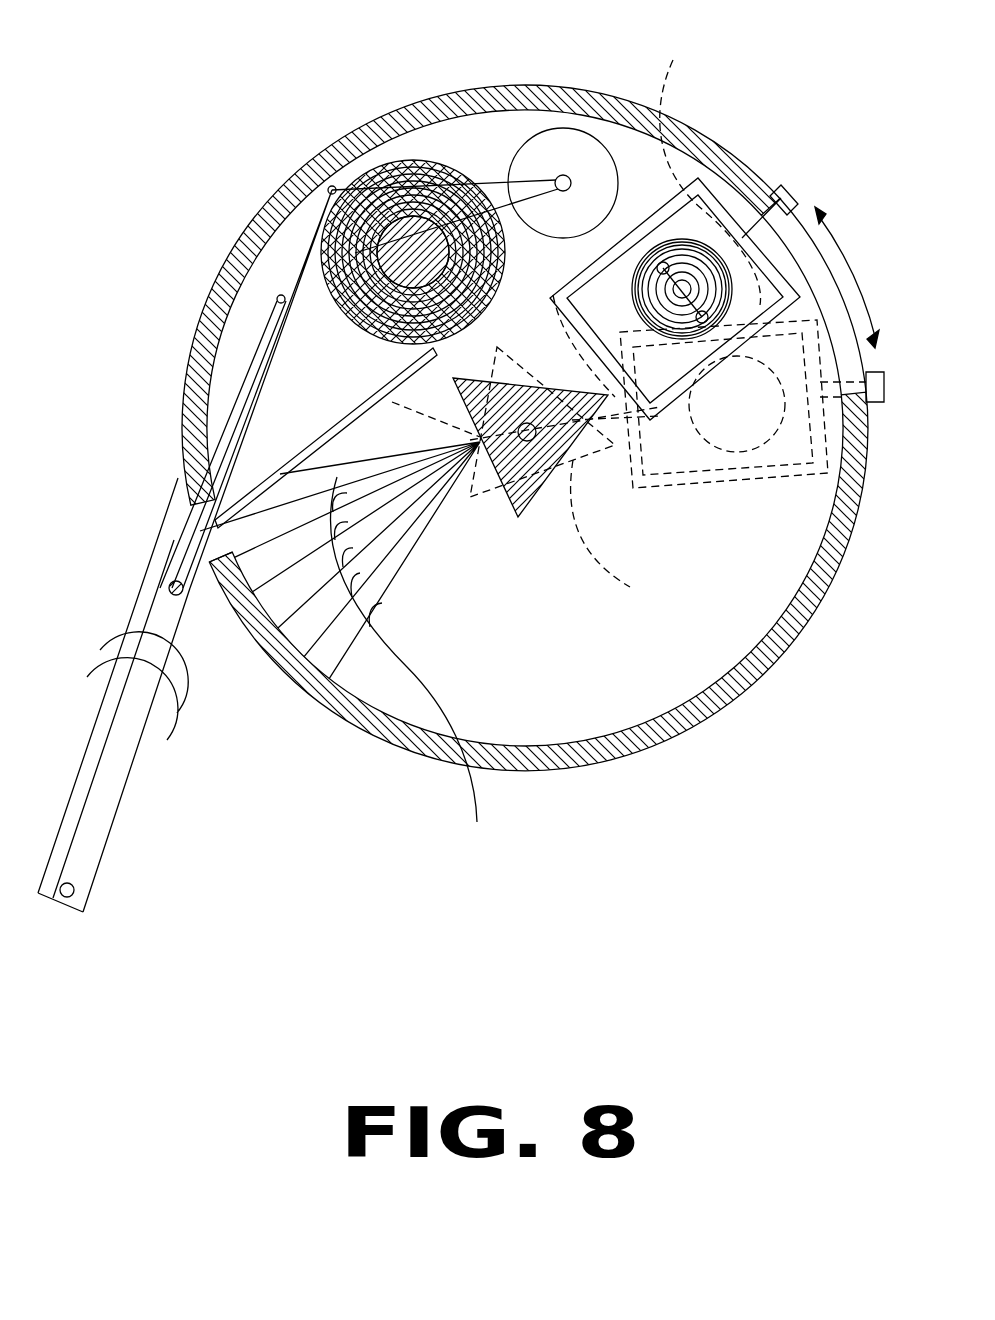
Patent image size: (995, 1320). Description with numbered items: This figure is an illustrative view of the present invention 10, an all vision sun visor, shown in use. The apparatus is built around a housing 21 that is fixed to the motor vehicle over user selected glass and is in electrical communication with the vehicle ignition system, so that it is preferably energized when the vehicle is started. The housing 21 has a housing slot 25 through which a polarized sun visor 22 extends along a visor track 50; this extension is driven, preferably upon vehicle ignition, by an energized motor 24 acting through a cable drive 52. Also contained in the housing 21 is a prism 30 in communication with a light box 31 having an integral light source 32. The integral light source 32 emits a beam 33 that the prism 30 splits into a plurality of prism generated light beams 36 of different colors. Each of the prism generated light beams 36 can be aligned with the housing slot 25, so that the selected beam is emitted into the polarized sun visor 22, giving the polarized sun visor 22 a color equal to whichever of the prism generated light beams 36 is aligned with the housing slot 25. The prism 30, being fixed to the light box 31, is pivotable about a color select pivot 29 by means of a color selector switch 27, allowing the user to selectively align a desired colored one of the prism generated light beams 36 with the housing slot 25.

The present invention 10 is at (208, 166).
The housing 21 is at (193, 333).
The polarized sun visor 22 is at (343, 315).
The motor 24 is at (523, 133).
The housing slot 25 is at (203, 573).
The color selector switch 27 is at (790, 203).
The color select pivot 29 is at (522, 442).
The prism 30 is at (482, 440).
The light box 31 is at (690, 200).
The integral light source 32 is at (683, 295).
The beam 33 is at (570, 382).
The prism generated light beams 36 is at (351, 652).
The visor track 50 is at (77, 807).
The cable drive 52 is at (132, 630).